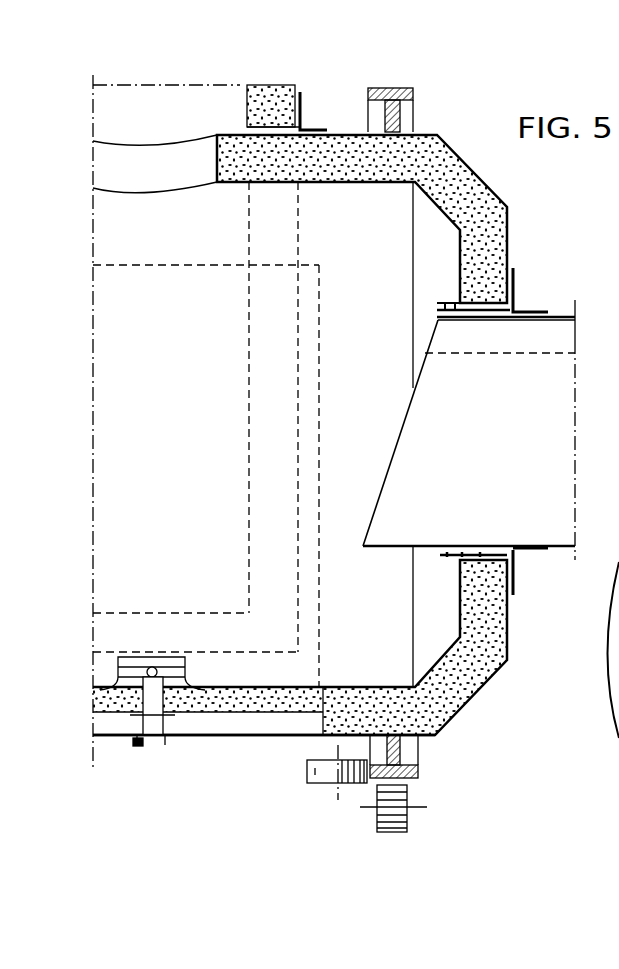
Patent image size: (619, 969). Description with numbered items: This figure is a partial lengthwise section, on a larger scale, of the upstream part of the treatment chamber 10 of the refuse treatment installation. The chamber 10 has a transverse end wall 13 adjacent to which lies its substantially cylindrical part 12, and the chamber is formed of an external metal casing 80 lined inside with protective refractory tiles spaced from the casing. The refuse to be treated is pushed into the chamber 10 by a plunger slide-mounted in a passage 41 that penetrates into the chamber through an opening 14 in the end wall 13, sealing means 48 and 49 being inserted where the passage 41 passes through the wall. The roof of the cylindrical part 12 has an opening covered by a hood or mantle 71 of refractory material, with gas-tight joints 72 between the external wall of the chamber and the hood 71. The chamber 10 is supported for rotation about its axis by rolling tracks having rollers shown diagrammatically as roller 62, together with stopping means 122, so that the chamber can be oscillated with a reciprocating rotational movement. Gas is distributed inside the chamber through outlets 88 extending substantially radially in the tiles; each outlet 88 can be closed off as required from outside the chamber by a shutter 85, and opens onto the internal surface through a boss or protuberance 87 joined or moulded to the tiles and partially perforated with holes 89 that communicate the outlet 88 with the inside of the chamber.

The chamber 10 is at (520, 222).
The substantially cylindrical part 12 is at (351, 131).
The transverse end wall 13 is at (490, 244).
The opening 14 is at (488, 560).
The passage 41 is at (548, 551).
The sealing means 48 is at (462, 321).
The sealing means 49 is at (520, 289).
The roller 62 is at (432, 795).
The hood or mantle 71 is at (248, 98).
The gas-tight joints 72 is at (313, 131).
The external metal casing 80 is at (232, 737).
The shutter 85 is at (165, 720).
The boss or protuberance 87 is at (185, 690).
The outlet 88 is at (148, 695).
The hole 89 is at (170, 665).
The stopping means 122 is at (310, 770).